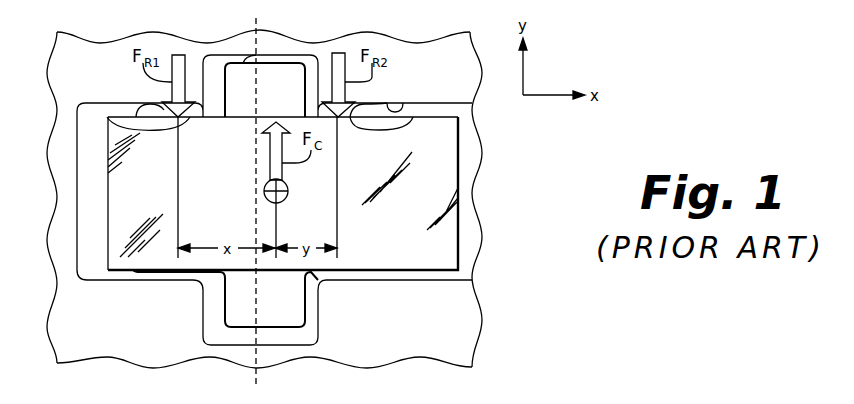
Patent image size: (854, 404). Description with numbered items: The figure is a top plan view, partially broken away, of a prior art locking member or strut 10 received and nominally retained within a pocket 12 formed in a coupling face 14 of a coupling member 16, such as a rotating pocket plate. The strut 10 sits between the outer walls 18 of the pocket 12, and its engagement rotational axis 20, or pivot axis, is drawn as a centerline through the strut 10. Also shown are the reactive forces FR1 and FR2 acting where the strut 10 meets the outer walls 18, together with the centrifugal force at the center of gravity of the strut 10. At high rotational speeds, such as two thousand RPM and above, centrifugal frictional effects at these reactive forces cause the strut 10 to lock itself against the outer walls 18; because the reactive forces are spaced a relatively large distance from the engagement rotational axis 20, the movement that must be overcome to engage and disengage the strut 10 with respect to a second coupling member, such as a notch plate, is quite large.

The locking member or strut 10 is at (278, 58).
The pocket 12 is at (400, 116).
The coupling face 14 is at (440, 318).
The coupling member 16 is at (478, 305).
The outer walls 18 is at (107, 117).
The engagement rotational axis 20 is at (257, 352).